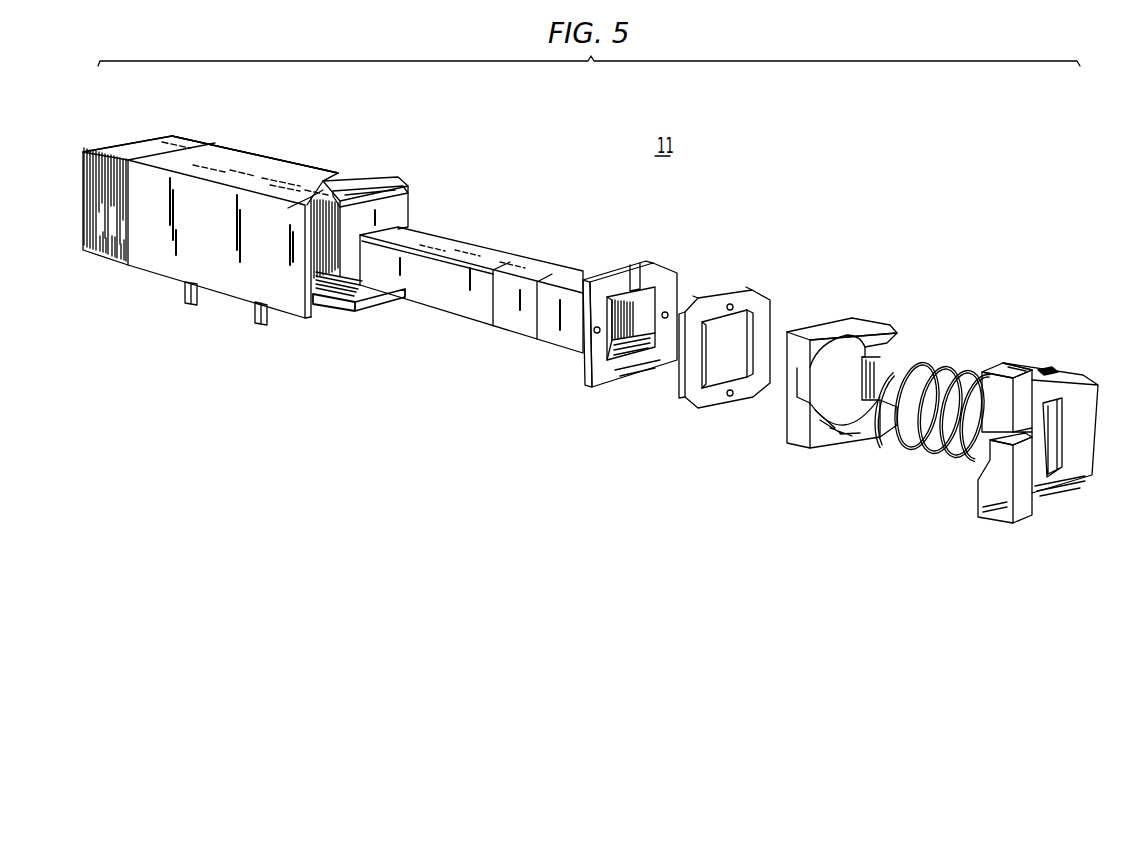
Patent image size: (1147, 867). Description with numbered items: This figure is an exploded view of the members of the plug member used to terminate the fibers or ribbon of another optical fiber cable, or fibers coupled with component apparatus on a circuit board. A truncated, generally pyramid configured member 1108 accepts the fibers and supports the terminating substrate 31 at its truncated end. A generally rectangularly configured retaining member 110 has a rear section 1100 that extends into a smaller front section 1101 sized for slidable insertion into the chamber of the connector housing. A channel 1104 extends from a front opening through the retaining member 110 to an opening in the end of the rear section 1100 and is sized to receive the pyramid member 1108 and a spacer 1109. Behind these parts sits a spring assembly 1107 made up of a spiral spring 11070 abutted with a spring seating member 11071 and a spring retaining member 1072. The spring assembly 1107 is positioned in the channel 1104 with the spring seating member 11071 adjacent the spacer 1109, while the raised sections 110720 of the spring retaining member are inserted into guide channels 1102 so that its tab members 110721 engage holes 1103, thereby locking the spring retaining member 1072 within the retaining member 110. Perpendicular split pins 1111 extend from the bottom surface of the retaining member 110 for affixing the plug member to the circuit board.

The substrate 31 is at (475, 305).
The retaining member 110 is at (291, 152).
The rear section 1100 is at (167, 264).
The front section 1101 is at (186, 139).
The guide channels 1102 is at (334, 190).
The holes 1103 is at (355, 194).
The channel 1104 is at (362, 300).
The spring assembly 1107 is at (906, 455).
The truncated generally pyramid configured member 1108 is at (658, 277).
The spacer 1109 is at (760, 303).
The split pins 1111 is at (255, 312).
The slotted block 1072 is at (1047, 490).
The spiral spring 11070 is at (940, 365).
The spring seating member 11071 is at (860, 320).
The raised sections 110720 is at (1015, 370).
The tab members 110721 is at (1050, 371).